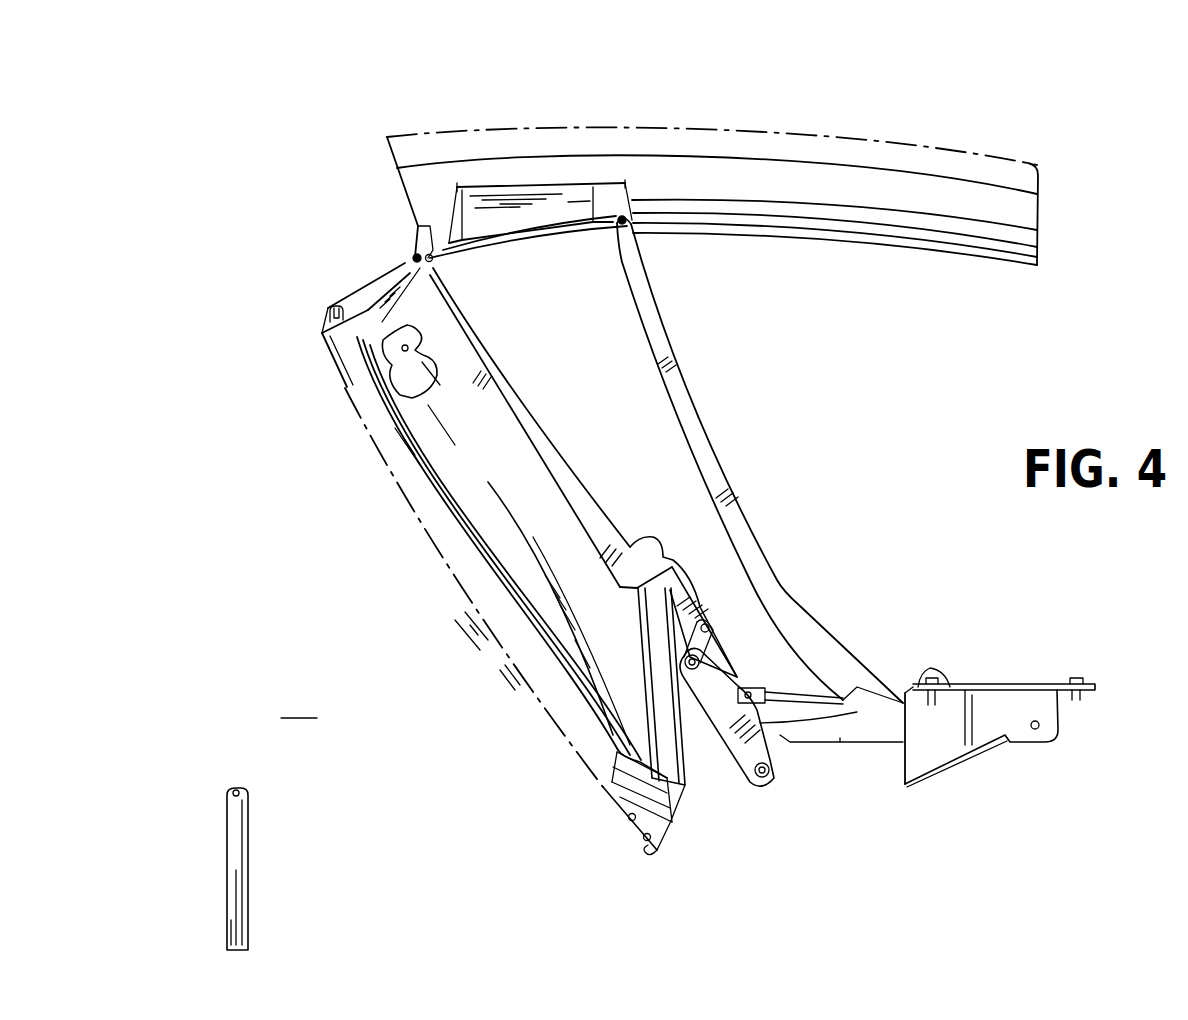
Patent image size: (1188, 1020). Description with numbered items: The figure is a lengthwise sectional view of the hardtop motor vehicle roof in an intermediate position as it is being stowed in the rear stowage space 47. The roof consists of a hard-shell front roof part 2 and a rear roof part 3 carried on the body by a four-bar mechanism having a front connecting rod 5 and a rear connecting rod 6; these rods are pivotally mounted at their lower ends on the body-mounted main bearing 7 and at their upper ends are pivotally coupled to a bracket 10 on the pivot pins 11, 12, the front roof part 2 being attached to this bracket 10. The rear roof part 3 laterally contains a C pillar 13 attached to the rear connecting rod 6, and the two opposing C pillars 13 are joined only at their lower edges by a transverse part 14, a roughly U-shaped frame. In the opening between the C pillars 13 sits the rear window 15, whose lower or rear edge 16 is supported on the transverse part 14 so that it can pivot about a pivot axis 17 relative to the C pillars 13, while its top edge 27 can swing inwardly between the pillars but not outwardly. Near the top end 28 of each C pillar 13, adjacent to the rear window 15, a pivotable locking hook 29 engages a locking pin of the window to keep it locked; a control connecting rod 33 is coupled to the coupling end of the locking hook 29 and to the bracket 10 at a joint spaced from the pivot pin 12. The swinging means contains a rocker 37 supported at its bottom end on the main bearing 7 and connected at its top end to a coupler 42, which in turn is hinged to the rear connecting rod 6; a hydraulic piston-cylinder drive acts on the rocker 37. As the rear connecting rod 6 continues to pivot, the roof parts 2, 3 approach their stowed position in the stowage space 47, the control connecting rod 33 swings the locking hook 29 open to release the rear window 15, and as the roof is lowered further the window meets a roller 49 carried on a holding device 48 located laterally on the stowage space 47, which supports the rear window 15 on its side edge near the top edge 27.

The front roof part 2 is at (835, 128).
The rear roof part 3 is at (406, 568).
The front connecting rod 5 is at (706, 455).
The rear connecting rod 6 is at (556, 490).
The main bearing 7 is at (953, 735).
The bracket 10 is at (545, 205).
The pivot pin 11 is at (632, 236).
The pivot pin 12 is at (440, 262).
The C pillar 13 is at (563, 587).
The transverse part 14 is at (677, 790).
The rear window 15 is at (488, 616).
The lower or rear edge 16 is at (605, 802).
The pivot axis 17 is at (633, 814).
The top edge 27 is at (320, 350).
The top end 28 is at (340, 288).
The locking hook 29 is at (413, 368).
The control connecting rod 33 is at (395, 290).
The rocker 37 is at (728, 708).
The coupler 42 is at (710, 645).
The stowage space 47 is at (299, 702).
The holding device 48 is at (233, 873).
The roller 49 is at (237, 788).